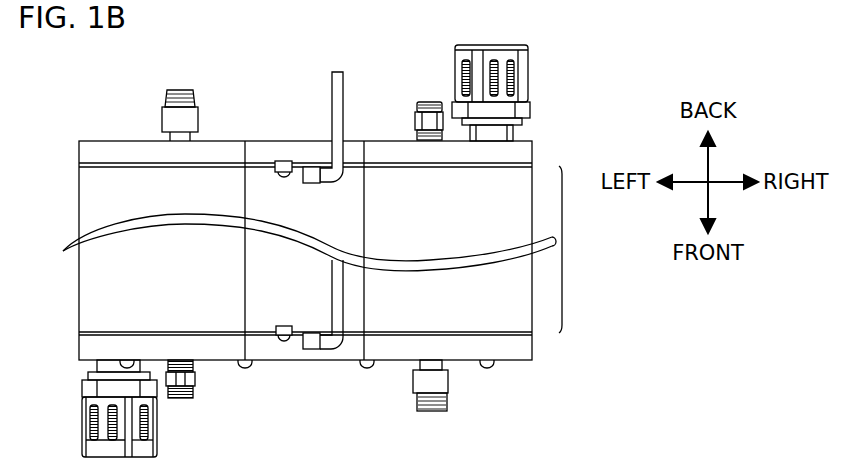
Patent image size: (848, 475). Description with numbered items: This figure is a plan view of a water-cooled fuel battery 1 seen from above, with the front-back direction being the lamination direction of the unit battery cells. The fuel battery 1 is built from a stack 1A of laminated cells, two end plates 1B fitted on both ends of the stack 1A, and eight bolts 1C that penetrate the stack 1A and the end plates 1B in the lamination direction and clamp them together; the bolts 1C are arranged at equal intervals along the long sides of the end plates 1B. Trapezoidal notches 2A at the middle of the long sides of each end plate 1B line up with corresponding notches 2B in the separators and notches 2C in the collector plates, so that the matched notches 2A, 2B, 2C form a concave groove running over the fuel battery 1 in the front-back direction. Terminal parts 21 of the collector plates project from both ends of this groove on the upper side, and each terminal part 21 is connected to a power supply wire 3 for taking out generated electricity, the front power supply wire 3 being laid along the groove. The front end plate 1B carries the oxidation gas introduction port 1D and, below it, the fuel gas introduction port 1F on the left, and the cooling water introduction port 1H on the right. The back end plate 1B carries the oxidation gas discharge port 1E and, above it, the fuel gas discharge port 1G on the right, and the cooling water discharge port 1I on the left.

The fuel battery 1 is at (58, 138).
The stack 1A is at (583, 249).
The end plate 1B is at (525, 162).
The bolt 1C is at (241, 358).
The oxidation gas introduction port 1D is at (90, 418).
The oxidation gas discharge port 1E is at (530, 68).
The fuel gas introduction port 1F is at (181, 398).
The fuel gas discharge port 1G is at (425, 103).
The cooling water introduction port 1H is at (430, 396).
The cooling water discharge port 1I is at (173, 90).
The notch 2A is at (372, 373).
The notch 2B is at (372, 373).
The notch 2C is at (372, 373).
The power supply wire 3 is at (333, 112).
The terminal part 21 is at (281, 162).